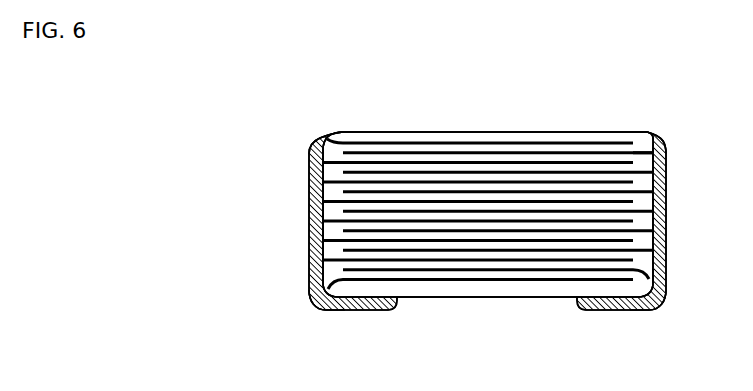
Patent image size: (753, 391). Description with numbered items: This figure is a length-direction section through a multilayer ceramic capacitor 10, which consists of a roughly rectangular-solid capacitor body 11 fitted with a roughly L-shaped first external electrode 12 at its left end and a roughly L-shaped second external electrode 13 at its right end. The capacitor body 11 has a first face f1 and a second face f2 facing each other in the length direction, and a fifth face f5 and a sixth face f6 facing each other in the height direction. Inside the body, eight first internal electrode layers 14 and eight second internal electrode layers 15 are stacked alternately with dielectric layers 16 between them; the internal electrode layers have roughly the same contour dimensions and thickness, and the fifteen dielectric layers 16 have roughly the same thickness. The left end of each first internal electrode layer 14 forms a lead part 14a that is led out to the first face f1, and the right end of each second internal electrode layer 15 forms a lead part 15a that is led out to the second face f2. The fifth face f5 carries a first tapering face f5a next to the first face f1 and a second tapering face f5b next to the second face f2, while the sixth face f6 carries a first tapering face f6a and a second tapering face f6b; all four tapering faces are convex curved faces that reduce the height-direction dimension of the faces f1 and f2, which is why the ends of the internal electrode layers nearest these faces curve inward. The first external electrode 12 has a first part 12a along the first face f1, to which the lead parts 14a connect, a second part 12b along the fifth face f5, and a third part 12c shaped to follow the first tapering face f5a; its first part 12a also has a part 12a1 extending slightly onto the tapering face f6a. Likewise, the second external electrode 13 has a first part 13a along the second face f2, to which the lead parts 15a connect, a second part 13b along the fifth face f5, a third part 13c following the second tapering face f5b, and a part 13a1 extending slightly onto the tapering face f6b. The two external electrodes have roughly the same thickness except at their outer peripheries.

The multilayer ceramic capacitor 10 is at (378, 126).
The capacitor body 11 is at (406, 131).
The first external electrode 12 is at (310, 201).
The first part of the first external electrode 12a is at (311, 253).
The part of the first part extending onto the first tapering face f6a 12a1 is at (319, 139).
The second part of the first external electrode 12b is at (369, 311).
The third part of the first external electrode 12c is at (313, 300).
The second external electrode 13 is at (666, 202).
The first part of the second external electrode 13a is at (661, 252).
The part of the first part extending onto the second tapering face f6b 13a1 is at (655, 139).
The second part of the second external electrode 13b is at (607, 311).
The third part of the second external electrode 13c is at (661, 300).
The first internal electrode layer 14 is at (446, 163).
The lead part of the first internal electrode layer 14a is at (322, 162).
The second internal electrode layer 15 is at (527, 170).
The lead part of the second internal electrode layer 15a is at (651, 168).
The dielectric layer 16 is at (568, 170).
The first face f1 is at (312, 227).
The second face f2 is at (662, 227).
The fifth face f5 is at (495, 299).
The first tapering face f5a is at (331, 311).
The second tapering face f5b is at (647, 311).
The sixth face f6 is at (494, 131).
The first tapering face on the sixth face f6a is at (341, 132).
The second tapering face on the sixth face f6b is at (643, 133).